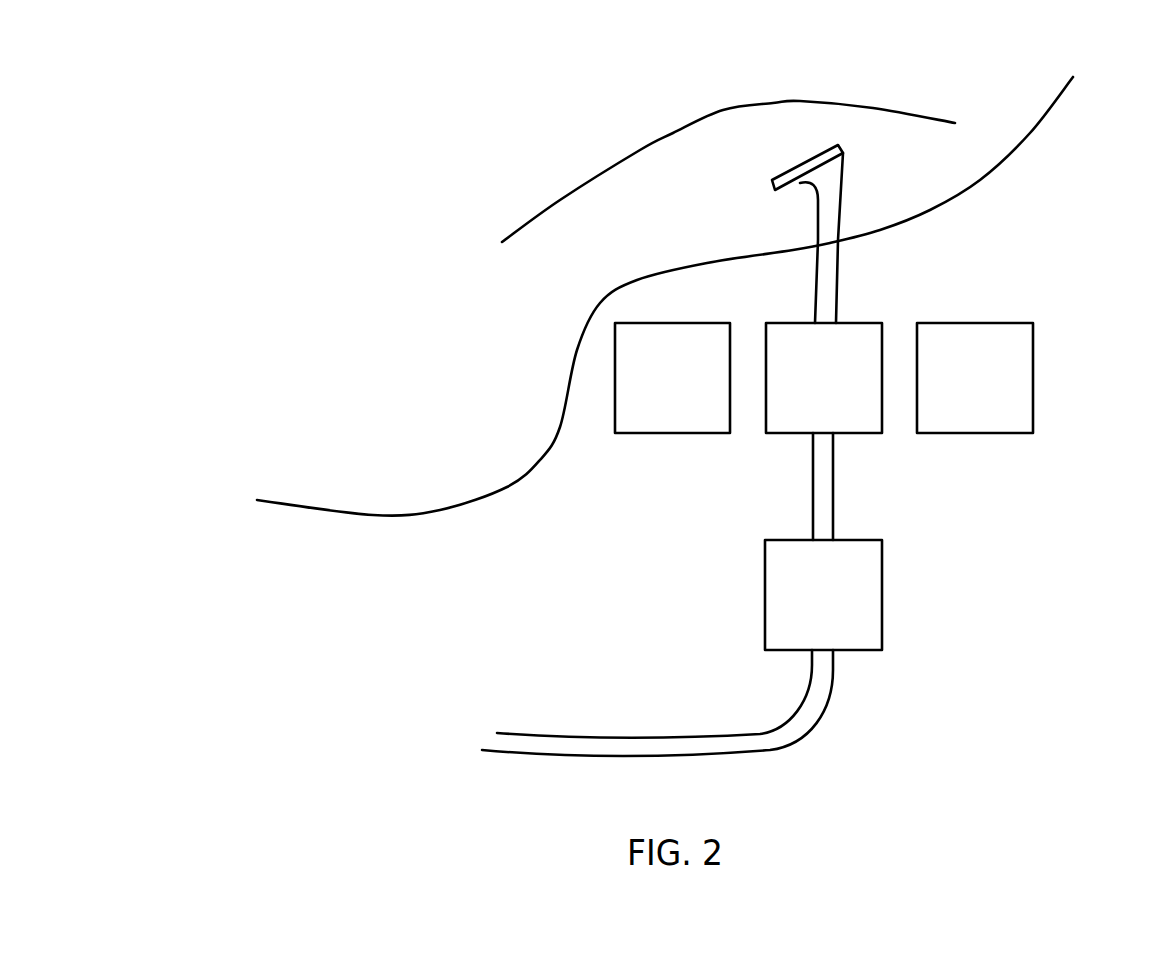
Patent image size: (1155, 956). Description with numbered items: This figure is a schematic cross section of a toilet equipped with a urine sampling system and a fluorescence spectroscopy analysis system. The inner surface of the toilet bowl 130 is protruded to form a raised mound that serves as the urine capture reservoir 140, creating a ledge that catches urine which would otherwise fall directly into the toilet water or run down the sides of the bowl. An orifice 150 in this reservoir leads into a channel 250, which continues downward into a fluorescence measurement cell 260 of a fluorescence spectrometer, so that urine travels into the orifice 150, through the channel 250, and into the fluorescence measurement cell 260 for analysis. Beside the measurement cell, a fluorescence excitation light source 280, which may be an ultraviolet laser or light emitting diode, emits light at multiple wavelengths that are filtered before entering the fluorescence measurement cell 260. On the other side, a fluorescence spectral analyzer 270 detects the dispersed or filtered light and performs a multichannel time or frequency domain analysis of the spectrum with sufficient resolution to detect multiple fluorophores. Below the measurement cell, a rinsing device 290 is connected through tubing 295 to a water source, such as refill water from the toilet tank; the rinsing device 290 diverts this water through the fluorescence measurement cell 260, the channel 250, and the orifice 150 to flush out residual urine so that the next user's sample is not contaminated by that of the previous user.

The toilet bowl 130 is at (383, 137).
The urine capture reservoir 140 is at (667, 168).
The orifice 150 is at (813, 156).
The channel 250 is at (837, 275).
The fluorescence measurement cell 260 is at (847, 420).
The fluorescence spectral analyzer 270 is at (1008, 373).
The fluorescence excitation light source 280 is at (668, 427).
The rinsing device 290 is at (868, 598).
The tubing 295 is at (798, 728).